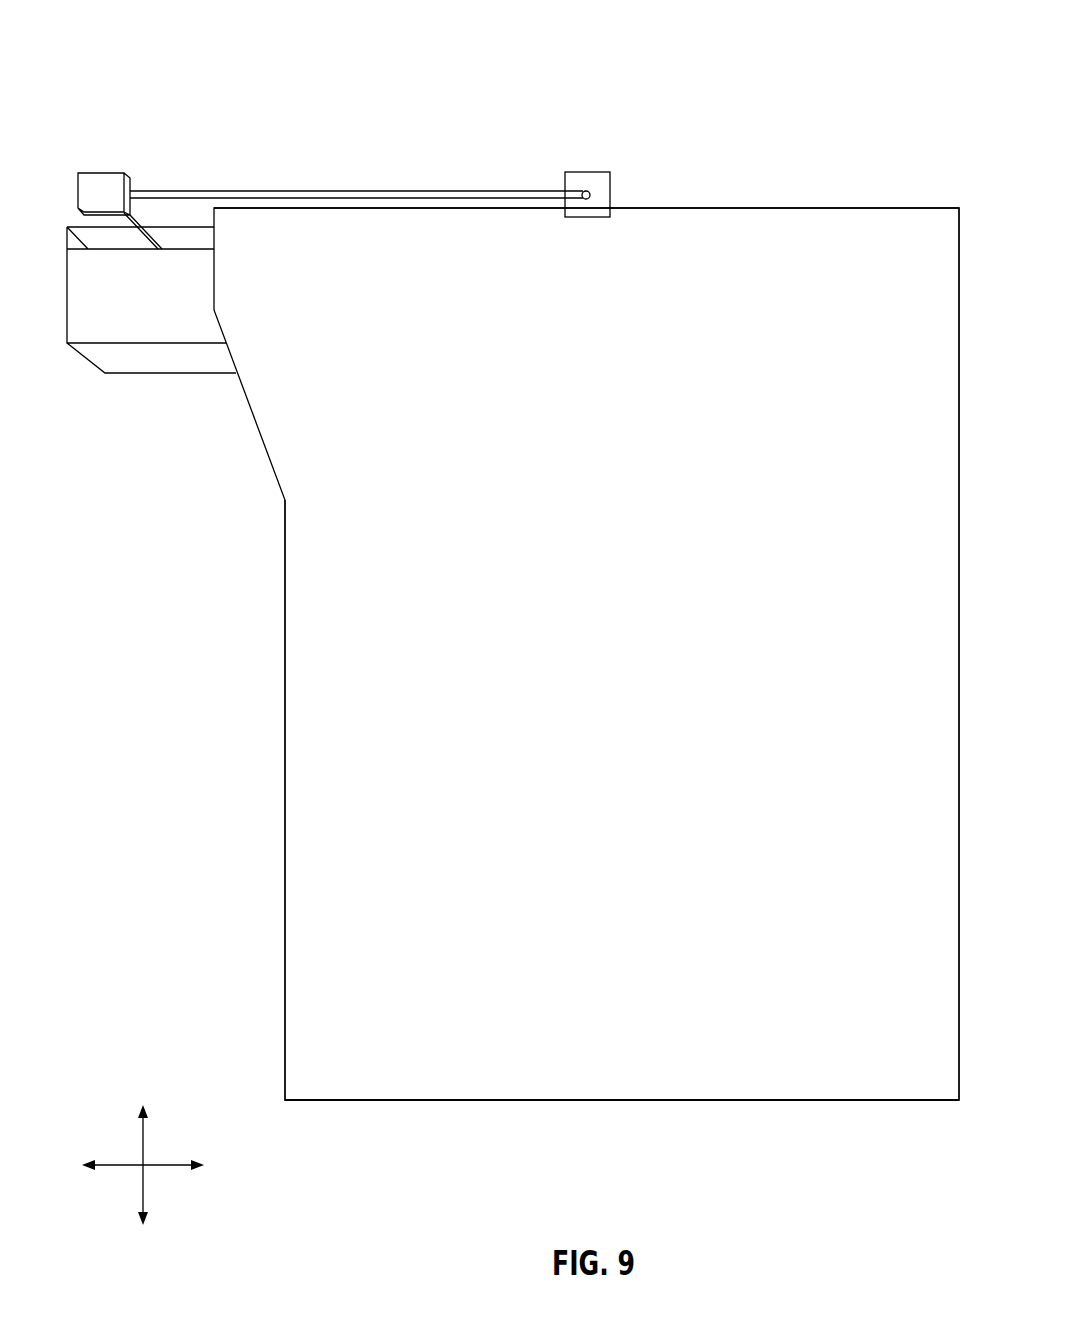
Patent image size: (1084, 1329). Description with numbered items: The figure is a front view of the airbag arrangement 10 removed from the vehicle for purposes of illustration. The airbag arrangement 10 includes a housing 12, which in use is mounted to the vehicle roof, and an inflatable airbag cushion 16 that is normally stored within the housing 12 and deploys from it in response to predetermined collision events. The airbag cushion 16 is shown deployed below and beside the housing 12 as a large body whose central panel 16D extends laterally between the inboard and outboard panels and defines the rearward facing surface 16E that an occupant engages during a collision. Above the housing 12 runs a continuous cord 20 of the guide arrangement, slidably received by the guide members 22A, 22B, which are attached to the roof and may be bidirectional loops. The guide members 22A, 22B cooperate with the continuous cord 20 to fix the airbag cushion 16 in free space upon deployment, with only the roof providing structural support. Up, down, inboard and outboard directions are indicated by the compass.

The airbag arrangement 10 is at (124, 48).
The housing 12 is at (150, 373).
The airbag cushion 16 is at (278, 620).
The rearward facing surface 16E is at (586, 654).
The central panel 16D is at (371, 1082).
The continuous cord 20 is at (184, 190).
The guide member 22A is at (590, 172).
The guide member 22B is at (102, 172).